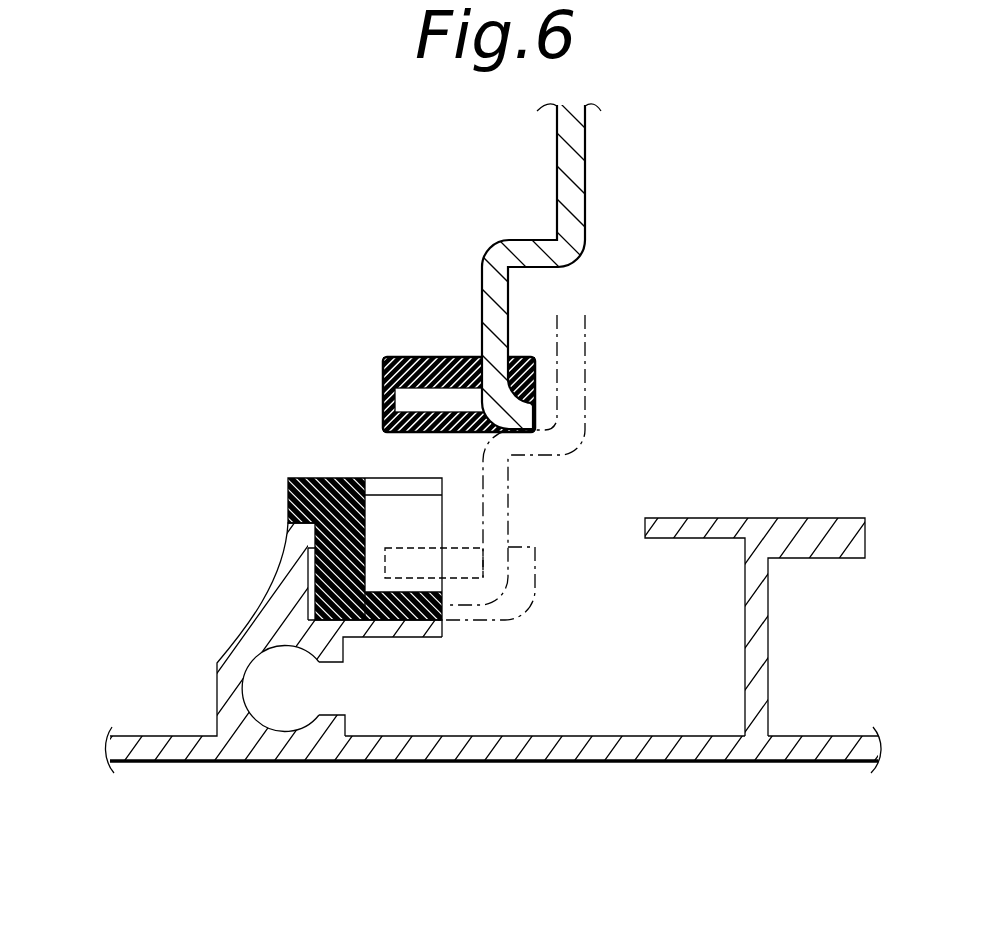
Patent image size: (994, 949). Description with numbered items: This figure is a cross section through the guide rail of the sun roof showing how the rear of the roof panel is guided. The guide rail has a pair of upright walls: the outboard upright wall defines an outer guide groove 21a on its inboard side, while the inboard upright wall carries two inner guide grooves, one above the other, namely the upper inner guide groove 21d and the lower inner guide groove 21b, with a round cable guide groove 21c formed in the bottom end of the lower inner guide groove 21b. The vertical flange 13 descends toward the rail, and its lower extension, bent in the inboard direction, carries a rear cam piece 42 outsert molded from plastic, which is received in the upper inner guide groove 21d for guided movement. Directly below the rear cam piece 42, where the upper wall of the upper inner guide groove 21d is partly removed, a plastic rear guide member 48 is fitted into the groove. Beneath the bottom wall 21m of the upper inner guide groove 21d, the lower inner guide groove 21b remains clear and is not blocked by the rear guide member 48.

The vertical flange 13 is at (592, 161).
The rear cam piece 42 is at (527, 390).
The rear guide member 48 is at (323, 478).
The outer guide groove 21a is at (727, 663).
The lower inner guide groove 21b is at (425, 703).
The cable guide groove 21c is at (325, 703).
The upper inner guide groove 21d is at (427, 560).
The bottom wall 21m is at (425, 628).